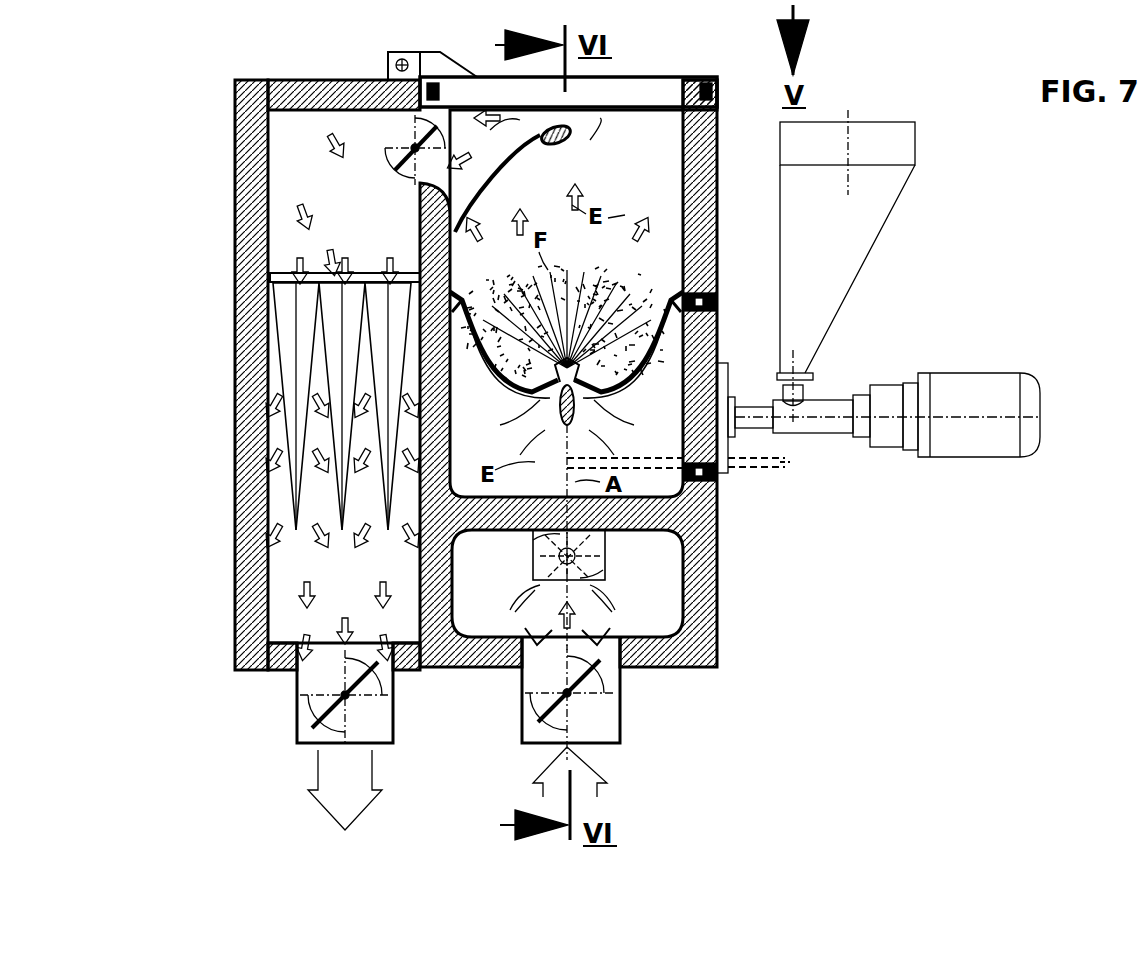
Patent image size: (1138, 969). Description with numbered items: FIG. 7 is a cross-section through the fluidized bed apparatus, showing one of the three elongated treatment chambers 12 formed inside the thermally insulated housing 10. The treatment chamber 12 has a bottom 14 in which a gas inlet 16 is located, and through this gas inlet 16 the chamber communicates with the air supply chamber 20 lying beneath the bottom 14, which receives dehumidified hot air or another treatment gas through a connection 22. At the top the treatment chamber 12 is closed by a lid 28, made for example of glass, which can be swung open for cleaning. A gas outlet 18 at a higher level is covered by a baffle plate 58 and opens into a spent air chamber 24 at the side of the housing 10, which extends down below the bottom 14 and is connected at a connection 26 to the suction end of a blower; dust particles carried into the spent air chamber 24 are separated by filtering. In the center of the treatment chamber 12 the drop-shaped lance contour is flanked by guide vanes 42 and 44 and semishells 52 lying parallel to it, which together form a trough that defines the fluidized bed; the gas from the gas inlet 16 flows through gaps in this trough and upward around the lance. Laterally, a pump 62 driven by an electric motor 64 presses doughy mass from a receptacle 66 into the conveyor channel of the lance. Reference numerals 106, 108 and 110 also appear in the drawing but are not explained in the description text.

The housing 10 is at (233, 181).
The treatment chamber 12 is at (653, 187).
The common bottom 14 is at (636, 513).
The gas inlet 16 is at (533, 572).
The gas outlet 18 is at (385, 147).
The air supply chamber 20 is at (619, 579).
The connection 22 is at (605, 720).
The spent air chamber 24 is at (282, 565).
The connection 26 is at (313, 710).
The lid 28 is at (648, 90).
The guide vane 42 is at (612, 437).
The guide vane 44 is at (722, 357).
The semishell 52 is at (683, 328).
The baffle plate 58 is at (565, 140).
The pump 62 is at (835, 400).
The electric motor 64 is at (975, 385).
The receptacle 66 is at (860, 265).
The dashed line / connection 106 is at (748, 456).
The dashed line / connection 108 is at (763, 461).
The dashed line / connection 110 is at (786, 470).